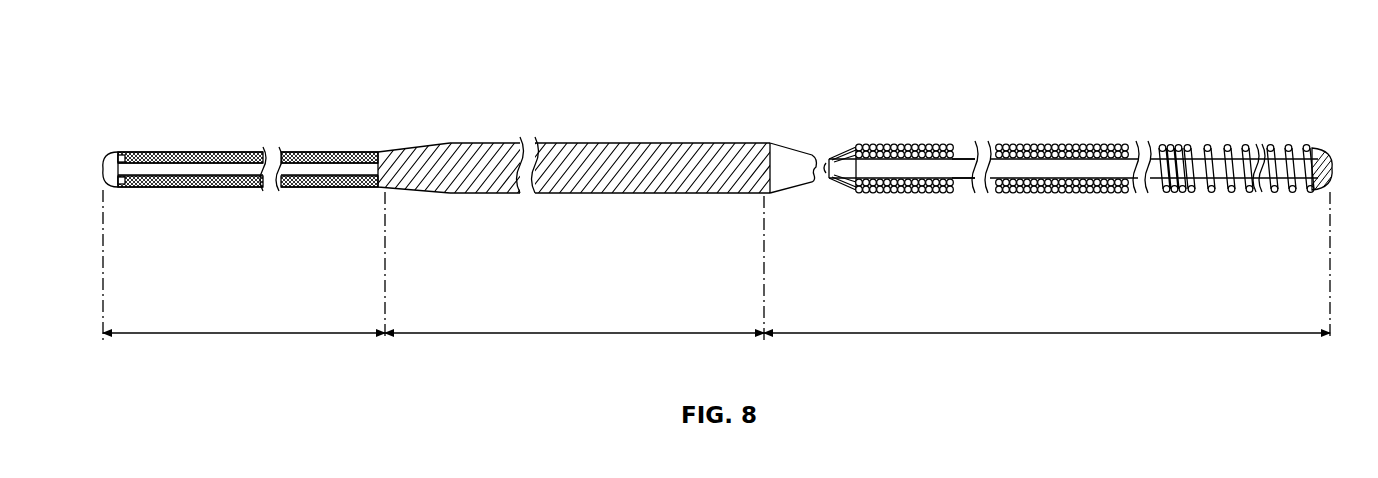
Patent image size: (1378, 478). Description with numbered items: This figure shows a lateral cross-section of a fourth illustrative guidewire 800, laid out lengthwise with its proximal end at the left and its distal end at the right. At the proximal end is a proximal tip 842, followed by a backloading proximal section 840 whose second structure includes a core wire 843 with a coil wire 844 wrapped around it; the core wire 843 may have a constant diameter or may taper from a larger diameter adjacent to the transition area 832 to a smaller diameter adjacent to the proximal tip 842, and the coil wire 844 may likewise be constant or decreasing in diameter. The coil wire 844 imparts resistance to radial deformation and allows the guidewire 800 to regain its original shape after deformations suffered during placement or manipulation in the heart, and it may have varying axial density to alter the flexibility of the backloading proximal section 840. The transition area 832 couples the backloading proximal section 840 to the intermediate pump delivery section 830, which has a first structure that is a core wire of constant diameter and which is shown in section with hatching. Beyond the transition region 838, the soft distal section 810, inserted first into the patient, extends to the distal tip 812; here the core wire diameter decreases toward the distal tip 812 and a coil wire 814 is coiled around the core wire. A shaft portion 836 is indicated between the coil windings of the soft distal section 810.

The guidewire 800 is at (202, 44).
The soft distal section 810 is at (1075, 148).
The distal tip 812 is at (1322, 166).
The coil wire 814 is at (1186, 190).
The intermediate pump delivery section 830 is at (597, 162).
The transition area 832 is at (418, 168).
The shaft section 836 is at (957, 178).
The transition region 838 is at (783, 178).
The backloading proximal section 840 is at (224, 160).
The proximal tip 842 is at (106, 170).
The core wire 843 is at (340, 162).
The coil wire 844 is at (311, 189).